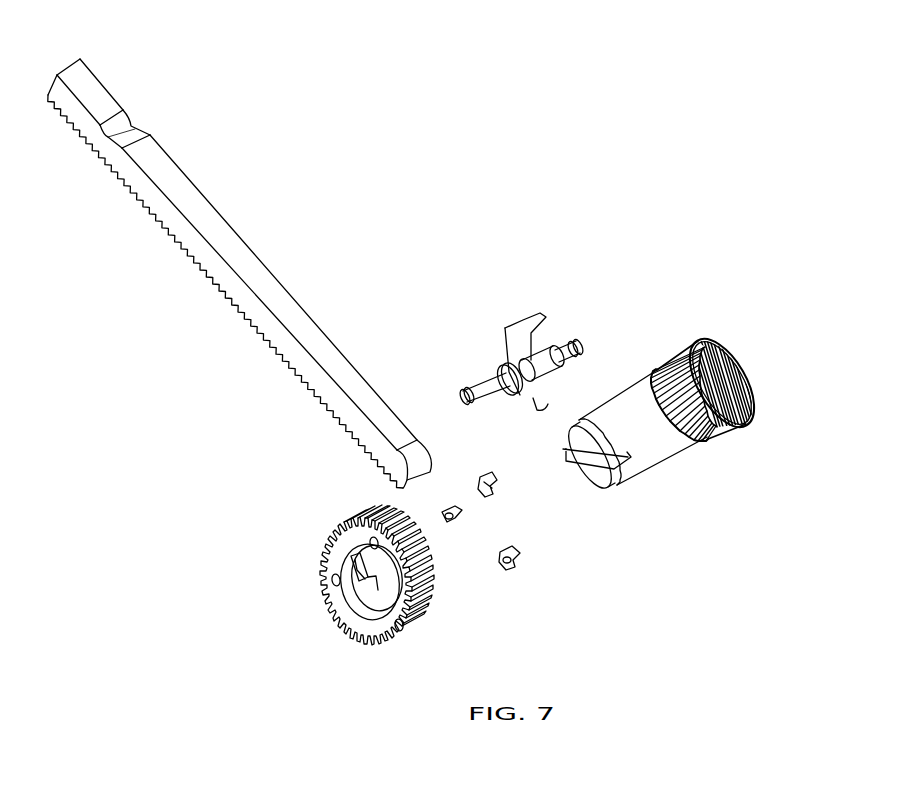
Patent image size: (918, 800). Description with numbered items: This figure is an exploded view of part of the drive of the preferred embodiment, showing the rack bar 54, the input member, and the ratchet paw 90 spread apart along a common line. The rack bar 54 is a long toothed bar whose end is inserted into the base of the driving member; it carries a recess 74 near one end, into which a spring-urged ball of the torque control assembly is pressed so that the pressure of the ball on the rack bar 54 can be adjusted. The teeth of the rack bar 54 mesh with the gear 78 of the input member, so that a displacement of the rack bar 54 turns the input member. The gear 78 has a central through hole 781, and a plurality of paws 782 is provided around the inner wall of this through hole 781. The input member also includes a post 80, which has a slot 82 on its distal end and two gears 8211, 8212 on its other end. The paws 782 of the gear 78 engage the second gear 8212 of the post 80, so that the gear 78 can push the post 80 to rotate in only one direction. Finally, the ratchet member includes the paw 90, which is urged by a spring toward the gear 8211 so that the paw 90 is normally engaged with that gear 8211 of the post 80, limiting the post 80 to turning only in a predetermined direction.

The rack bar 54 is at (240, 273).
The recess 74 is at (133, 118).
The gear 78 is at (345, 583).
The through hole 781 is at (353, 605).
The paws 782 is at (497, 481).
The post 80 is at (672, 430).
The slot 82 is at (591, 466).
The gear 8211 is at (710, 438).
The second gear 8212 is at (677, 353).
The paw 90 is at (515, 326).